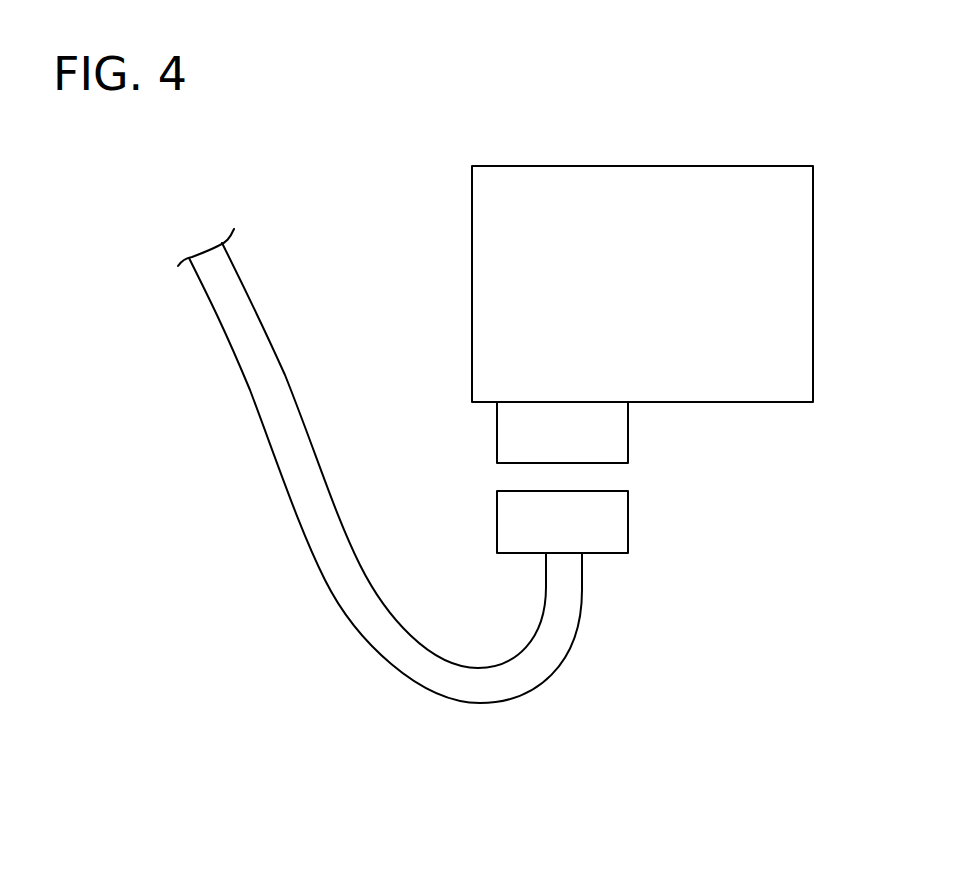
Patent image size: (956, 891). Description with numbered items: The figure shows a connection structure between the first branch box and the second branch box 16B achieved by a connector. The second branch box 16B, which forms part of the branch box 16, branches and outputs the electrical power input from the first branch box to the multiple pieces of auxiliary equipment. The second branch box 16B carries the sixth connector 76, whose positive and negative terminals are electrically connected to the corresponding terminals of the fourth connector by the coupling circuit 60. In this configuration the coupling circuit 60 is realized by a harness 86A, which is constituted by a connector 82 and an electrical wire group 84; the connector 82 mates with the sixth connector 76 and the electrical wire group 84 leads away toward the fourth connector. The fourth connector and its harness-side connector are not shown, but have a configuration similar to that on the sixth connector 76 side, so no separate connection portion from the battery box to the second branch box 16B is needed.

The second branch box 16B is at (642, 246).
The branch box 16 is at (629, 195).
The sixth connector 76 is at (610, 437).
The coupling circuit 60 is at (380, 504).
The electrical wire group 84 is at (472, 693).
The connector 82 is at (607, 543).
The harness 86A is at (553, 658).